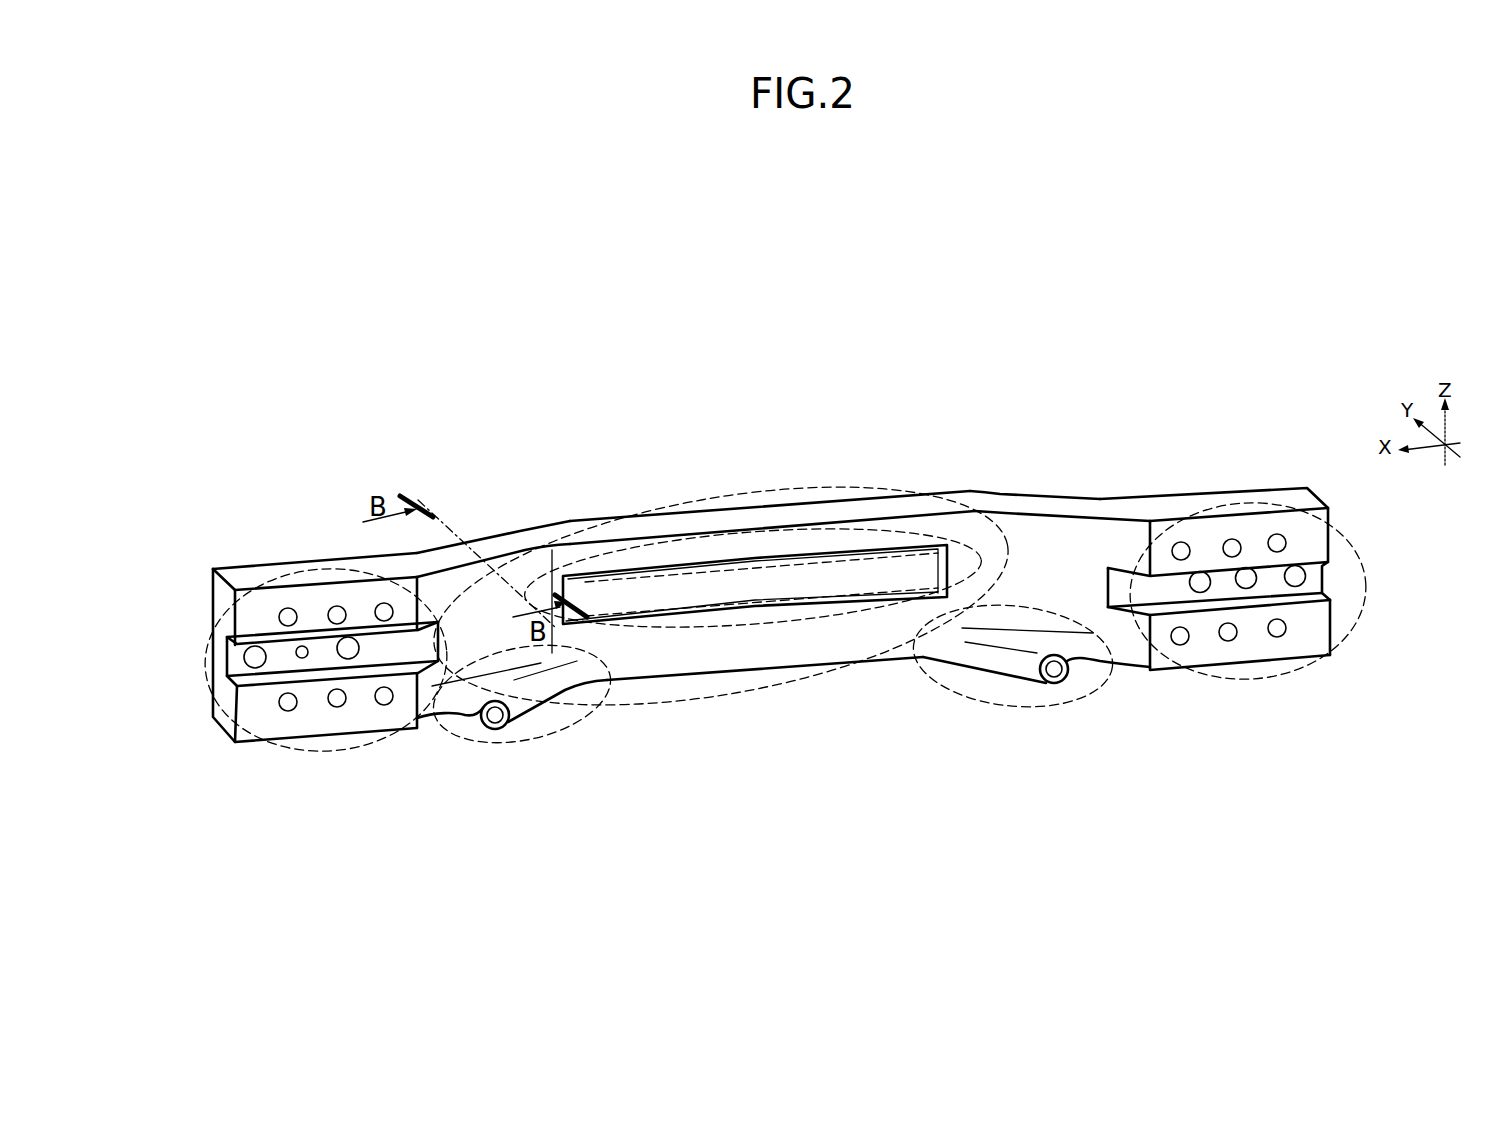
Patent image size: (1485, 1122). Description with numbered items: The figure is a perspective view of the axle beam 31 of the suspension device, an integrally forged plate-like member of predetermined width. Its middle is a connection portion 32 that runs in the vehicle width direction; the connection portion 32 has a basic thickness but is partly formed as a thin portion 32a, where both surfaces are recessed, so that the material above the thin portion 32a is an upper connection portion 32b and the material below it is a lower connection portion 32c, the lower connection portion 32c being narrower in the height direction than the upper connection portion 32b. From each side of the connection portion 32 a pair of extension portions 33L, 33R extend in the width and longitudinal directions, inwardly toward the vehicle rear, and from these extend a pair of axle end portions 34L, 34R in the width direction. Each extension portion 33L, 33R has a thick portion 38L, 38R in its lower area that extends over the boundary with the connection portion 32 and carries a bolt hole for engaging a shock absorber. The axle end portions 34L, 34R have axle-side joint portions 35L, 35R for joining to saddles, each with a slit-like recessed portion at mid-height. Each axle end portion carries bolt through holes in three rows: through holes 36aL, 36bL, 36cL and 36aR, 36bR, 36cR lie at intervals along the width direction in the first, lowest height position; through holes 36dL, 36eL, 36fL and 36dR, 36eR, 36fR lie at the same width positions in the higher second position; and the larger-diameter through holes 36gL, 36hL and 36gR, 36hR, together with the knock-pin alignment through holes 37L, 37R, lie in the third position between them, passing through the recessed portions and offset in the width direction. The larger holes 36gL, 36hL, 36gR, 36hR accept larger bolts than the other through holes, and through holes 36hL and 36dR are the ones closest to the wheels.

The axle beam 31 is at (877, 382).
The connection portion 32 is at (780, 512).
The thin portion 32a is at (978, 512).
The upper connection portion 32b is at (740, 489).
The lower connection portion 32c is at (829, 668).
The extension portion 33L is at (497, 540).
The extension portion 33R is at (1034, 507).
The axle end portion 34L is at (215, 712).
The axle end portion 34R is at (1330, 618).
The axle-side joint portion 35L is at (208, 640).
The axle-side joint portion 35R is at (1310, 680).
The through hole 36aL is at (288, 702).
The through hole 36bL is at (337, 698).
The through hole 36cL is at (384, 696).
The through hole 36dL is at (288, 617).
The through hole 36eL is at (337, 615).
The through hole 36fL is at (385, 612).
The through hole 36gL is at (255, 657).
The through hole 36hL is at (348, 648).
The through hole 37L is at (302, 652).
The thick portion 38L is at (535, 732).
The through hole 36aR is at (1277, 628).
The through hole 36bR is at (1228, 632).
The through hole 36cR is at (1180, 636).
The through hole 36dR is at (1277, 543).
The through hole 36eR is at (1232, 548).
The through hole 36fR is at (1181, 551).
The through hole 36gR is at (1295, 576).
The through hole 36hR is at (1200, 582).
The through hole 37R is at (1246, 578).
The thick portion 38R is at (1008, 700).